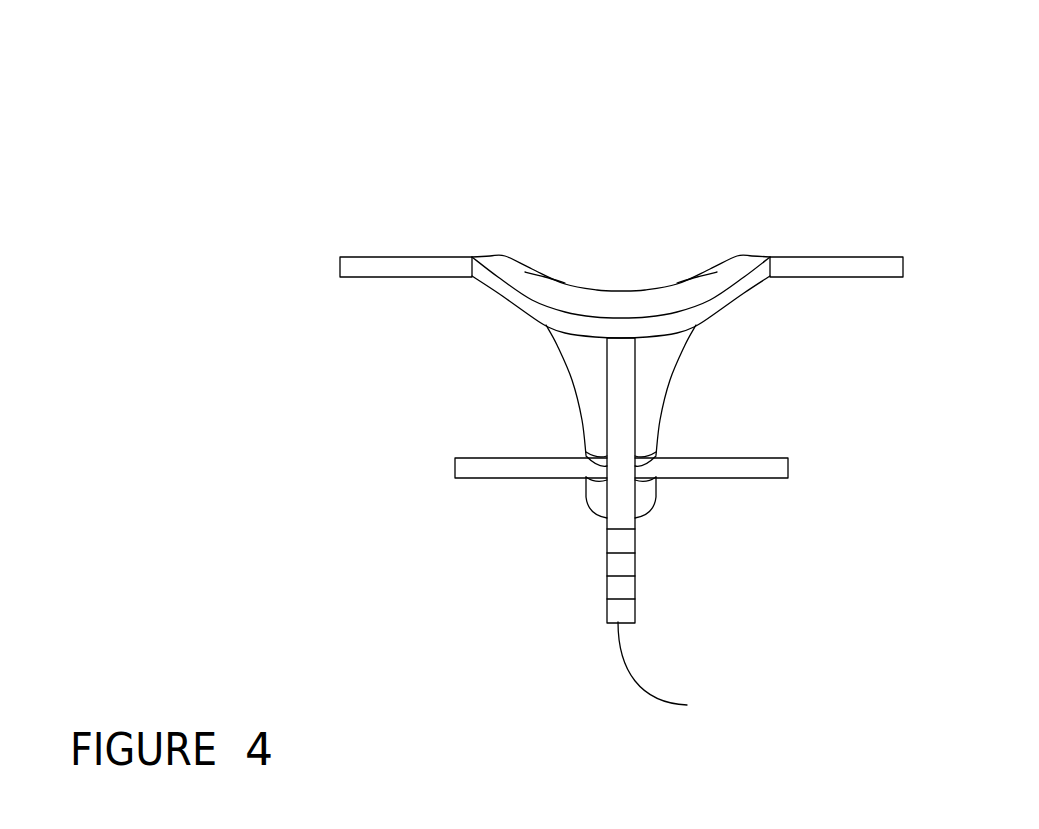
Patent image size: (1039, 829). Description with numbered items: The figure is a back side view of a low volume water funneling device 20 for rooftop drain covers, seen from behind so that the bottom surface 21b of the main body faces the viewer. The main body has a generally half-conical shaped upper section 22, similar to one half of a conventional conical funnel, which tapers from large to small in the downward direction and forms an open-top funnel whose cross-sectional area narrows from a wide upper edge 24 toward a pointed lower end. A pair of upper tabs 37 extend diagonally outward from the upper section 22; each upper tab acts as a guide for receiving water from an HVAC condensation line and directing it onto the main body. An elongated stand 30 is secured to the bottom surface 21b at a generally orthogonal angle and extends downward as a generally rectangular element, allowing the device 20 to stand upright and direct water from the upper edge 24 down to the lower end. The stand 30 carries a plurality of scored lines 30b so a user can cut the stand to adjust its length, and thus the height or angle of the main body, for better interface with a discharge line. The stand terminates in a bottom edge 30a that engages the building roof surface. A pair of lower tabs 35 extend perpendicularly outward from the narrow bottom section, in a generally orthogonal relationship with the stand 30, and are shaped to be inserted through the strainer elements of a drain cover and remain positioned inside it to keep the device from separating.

The low volume water funneling device 20 is at (172, 128).
The half-conical shaped upper section 22 is at (617, 302).
The wide upper edge 24 is at (547, 313).
The bottom surface 21b is at (648, 358).
The upper tabs 37 is at (405, 265).
The lower tabs 35 is at (467, 470).
The elongated stand 30 is at (617, 503).
The scored lines 30b is at (635, 529).
The bottom edge 30a is at (678, 671).